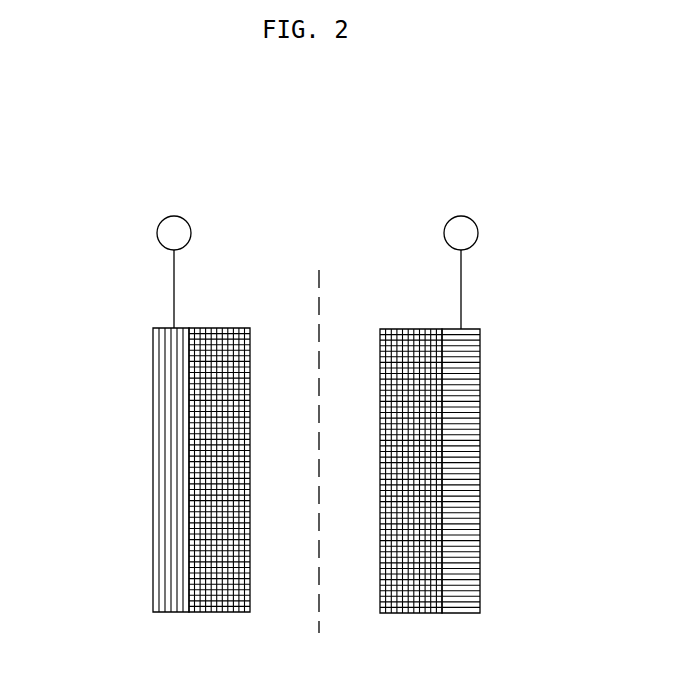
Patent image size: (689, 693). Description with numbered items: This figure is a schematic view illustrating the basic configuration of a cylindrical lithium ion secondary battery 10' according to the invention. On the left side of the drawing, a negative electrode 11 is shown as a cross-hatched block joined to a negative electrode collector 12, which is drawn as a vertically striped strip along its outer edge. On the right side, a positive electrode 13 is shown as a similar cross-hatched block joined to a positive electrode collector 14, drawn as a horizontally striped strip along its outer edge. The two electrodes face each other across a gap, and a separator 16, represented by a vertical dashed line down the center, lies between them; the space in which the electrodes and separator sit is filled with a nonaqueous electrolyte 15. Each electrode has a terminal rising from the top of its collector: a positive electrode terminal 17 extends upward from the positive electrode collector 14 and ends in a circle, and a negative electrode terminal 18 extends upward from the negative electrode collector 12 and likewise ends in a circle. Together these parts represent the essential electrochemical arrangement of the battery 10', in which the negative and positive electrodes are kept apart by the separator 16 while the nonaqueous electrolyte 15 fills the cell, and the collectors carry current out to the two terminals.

The cylindrical lithium ion secondary battery 10' is at (314, 384).
The negative electrode 11 is at (213, 600).
The negative electrode collector 12 is at (160, 572).
The positive electrode 13 is at (405, 600).
The positive electrode collector 14 is at (457, 585).
The nonaqueous electrolyte 15 is at (362, 466).
The separator 16 is at (320, 307).
The positive electrode terminal 17 is at (479, 229).
The negative electrode terminal 18 is at (191, 226).